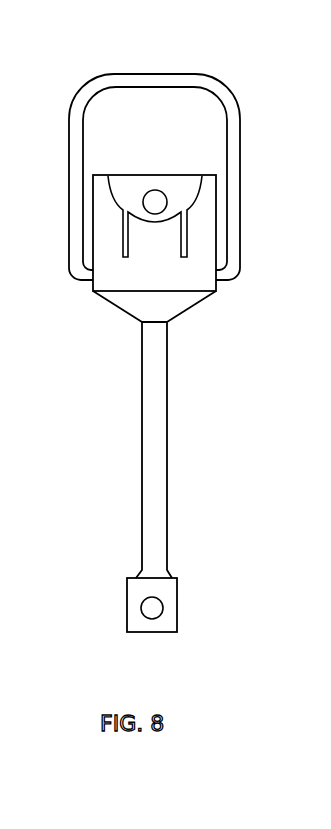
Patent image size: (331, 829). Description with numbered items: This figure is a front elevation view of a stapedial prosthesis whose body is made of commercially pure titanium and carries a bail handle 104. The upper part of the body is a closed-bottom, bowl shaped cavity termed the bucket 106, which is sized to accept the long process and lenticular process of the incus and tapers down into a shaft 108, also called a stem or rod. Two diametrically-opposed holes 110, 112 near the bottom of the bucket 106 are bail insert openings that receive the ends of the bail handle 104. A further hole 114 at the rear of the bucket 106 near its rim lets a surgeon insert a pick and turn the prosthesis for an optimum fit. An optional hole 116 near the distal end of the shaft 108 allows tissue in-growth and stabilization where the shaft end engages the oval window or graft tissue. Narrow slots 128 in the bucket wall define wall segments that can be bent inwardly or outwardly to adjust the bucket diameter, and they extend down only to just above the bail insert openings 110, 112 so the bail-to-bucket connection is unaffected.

The bail handle 104 is at (235, 113).
The bucket 106 is at (210, 233).
The shaft 108 is at (168, 442).
The hole 110 is at (90, 289).
The hole 112 is at (219, 289).
The hole 114 is at (153, 198).
The hole 116 is at (163, 608).
The slots 128 is at (187, 232).